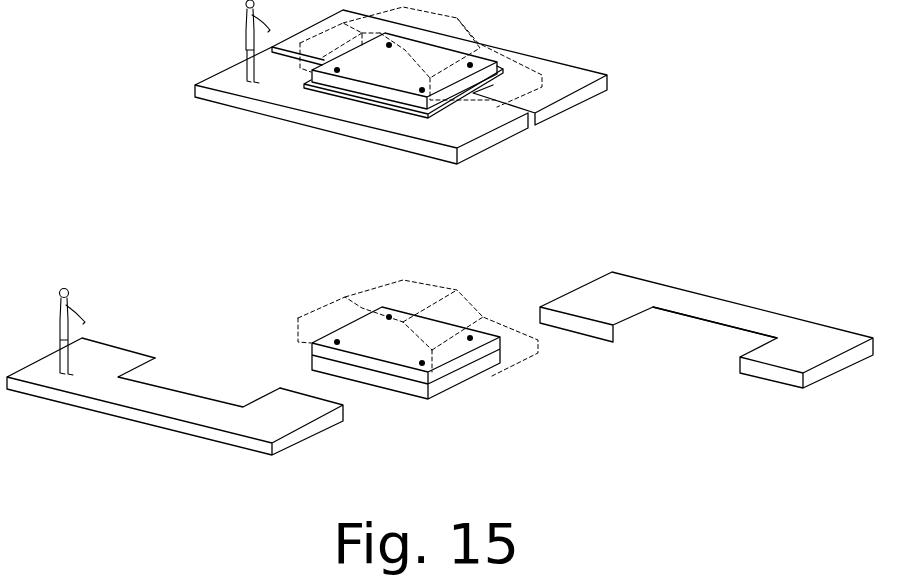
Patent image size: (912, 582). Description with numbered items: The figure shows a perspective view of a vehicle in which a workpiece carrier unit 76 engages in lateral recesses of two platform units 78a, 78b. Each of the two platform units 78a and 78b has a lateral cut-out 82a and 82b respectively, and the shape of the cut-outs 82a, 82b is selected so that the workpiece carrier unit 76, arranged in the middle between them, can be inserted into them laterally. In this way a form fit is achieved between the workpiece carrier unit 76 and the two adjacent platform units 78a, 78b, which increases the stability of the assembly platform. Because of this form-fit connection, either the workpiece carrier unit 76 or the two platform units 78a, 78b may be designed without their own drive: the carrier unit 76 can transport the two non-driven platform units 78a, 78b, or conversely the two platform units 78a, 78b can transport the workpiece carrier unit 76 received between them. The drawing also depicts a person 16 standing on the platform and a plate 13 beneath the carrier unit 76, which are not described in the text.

The person / user 16 is at (252, 27).
The platform plate 13 is at (393, 99).
The workpiece carrier unit 76 is at (512, 80).
The platform unit 78a is at (278, 271).
The platform unit 78b is at (589, 219).
The lateral cut-out 82a is at (196, 390).
The lateral cut-out 82b is at (690, 333).